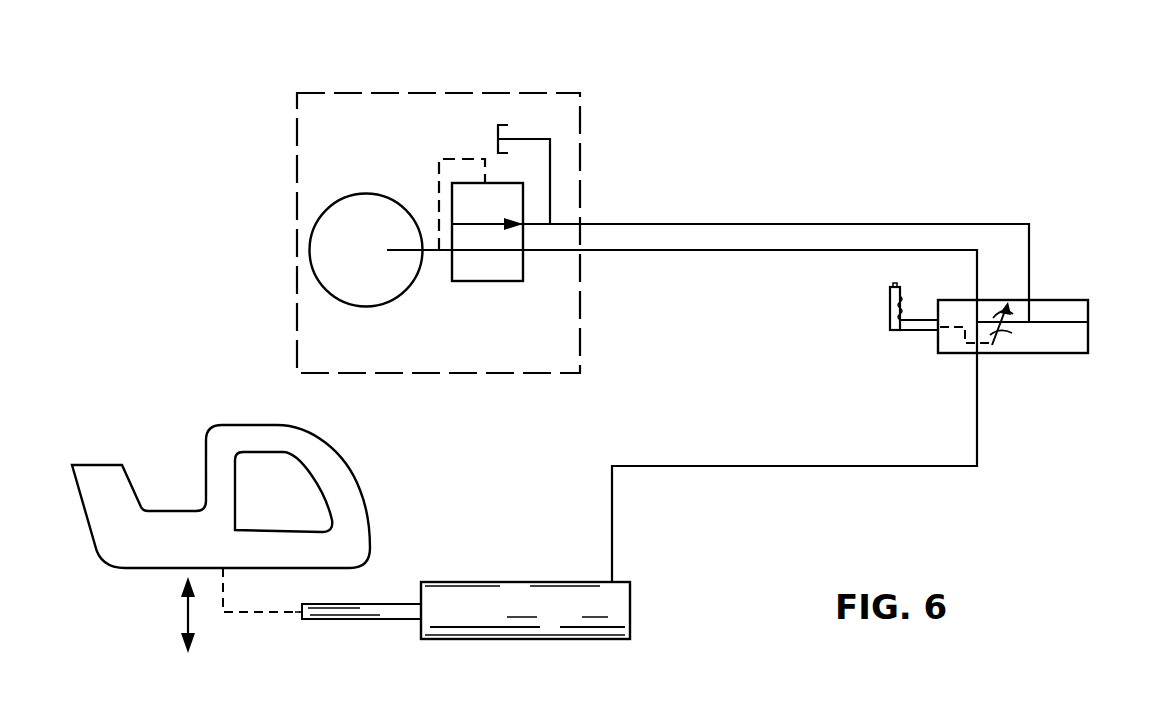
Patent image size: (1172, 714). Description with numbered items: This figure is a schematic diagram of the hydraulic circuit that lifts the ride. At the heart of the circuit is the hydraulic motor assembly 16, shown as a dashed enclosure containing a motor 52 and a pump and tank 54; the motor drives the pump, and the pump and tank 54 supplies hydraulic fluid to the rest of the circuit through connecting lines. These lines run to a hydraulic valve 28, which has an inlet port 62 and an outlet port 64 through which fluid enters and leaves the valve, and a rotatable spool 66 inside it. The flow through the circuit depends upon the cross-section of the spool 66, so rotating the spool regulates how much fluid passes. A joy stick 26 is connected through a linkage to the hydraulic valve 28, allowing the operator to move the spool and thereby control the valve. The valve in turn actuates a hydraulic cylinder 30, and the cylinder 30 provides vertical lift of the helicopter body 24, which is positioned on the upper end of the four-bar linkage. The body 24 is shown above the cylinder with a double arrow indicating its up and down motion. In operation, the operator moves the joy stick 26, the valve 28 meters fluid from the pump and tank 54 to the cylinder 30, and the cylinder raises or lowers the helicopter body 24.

The hydraulic motor assembly 16 is at (596, 60).
The helicopter body 24 is at (188, 549).
The joy stick 26 is at (888, 300).
The hydraulic valve 28 is at (1088, 337).
The hydraulic cylinder 30 is at (497, 560).
The motor 52 is at (385, 281).
The pump and tank 54 is at (494, 246).
The inlet port 62 is at (977, 275).
The outlet port 64 is at (1029, 253).
The rotatable spool 66 is at (1013, 327).